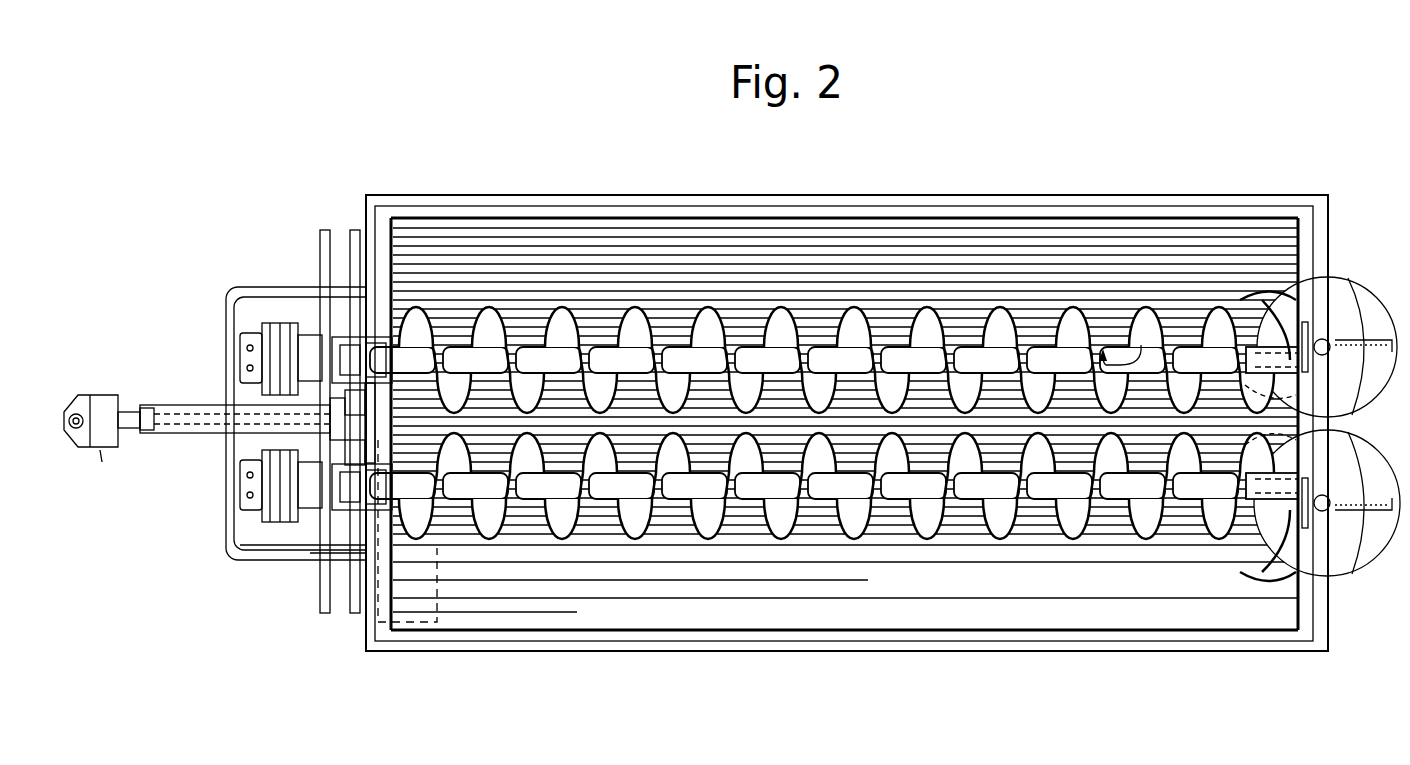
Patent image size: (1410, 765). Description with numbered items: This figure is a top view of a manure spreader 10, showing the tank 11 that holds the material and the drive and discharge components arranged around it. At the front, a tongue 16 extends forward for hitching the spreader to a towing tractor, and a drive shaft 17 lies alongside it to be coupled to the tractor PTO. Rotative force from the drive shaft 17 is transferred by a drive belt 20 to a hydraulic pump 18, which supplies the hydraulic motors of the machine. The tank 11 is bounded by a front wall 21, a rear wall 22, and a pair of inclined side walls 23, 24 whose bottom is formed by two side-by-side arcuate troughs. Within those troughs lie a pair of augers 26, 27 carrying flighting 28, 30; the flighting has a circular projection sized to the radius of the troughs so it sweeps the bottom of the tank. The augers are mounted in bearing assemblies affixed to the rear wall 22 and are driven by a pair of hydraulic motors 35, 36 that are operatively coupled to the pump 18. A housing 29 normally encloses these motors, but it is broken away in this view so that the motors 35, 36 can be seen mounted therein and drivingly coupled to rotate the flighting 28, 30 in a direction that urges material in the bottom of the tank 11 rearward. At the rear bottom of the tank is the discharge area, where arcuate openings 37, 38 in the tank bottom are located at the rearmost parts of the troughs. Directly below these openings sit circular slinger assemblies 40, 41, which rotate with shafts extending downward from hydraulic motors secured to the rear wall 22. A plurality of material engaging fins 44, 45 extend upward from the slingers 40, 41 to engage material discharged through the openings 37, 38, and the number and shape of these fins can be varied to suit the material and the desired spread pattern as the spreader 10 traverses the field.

The manure spreader 10 is at (575, 125).
The tank 11 is at (908, 662).
The tongue 16 is at (100, 483).
The drive shaft 17 is at (210, 408).
The hydraulic pump 18 is at (437, 583).
The drive belt 20 is at (338, 614).
The front wall 21 is at (380, 272).
The rear wall 22 is at (1310, 600).
The inclined side wall 23 is at (962, 614).
The inclined side wall 24 is at (900, 265).
The auger 26 is at (834, 573).
The auger 27 is at (834, 273).
The flighting 28 is at (1150, 523).
The housing 29 is at (233, 287).
The flighting 30 is at (1127, 300).
The hydraulic motor 35 is at (272, 538).
The hydraulic motor 36 is at (277, 310).
The arcuate opening 37 is at (1280, 565).
The arcuate opening 38 is at (1283, 280).
The circular slinger assembly 40 is at (1343, 598).
The circular slinger assembly 41 is at (1368, 320).
The material engaging fins 44 is at (1353, 573).
The material engaging fins 45 is at (1355, 297).